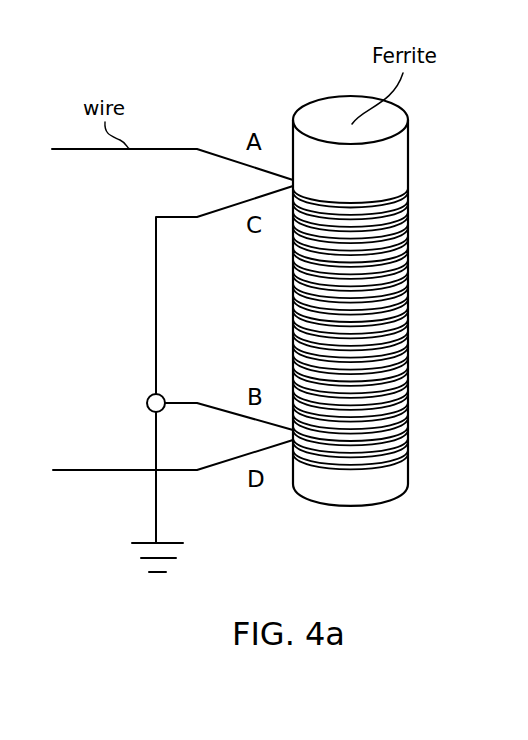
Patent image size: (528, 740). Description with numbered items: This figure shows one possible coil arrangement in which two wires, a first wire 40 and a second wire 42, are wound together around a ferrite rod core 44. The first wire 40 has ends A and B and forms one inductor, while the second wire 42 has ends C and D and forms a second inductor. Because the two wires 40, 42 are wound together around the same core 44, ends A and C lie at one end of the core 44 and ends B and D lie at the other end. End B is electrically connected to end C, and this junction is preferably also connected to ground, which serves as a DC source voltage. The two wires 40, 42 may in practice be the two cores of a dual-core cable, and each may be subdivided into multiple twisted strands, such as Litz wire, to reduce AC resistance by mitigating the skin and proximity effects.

The first wire 40 is at (396, 214).
The second wire 42 is at (383, 208).
The ferrite core 44 is at (338, 120).